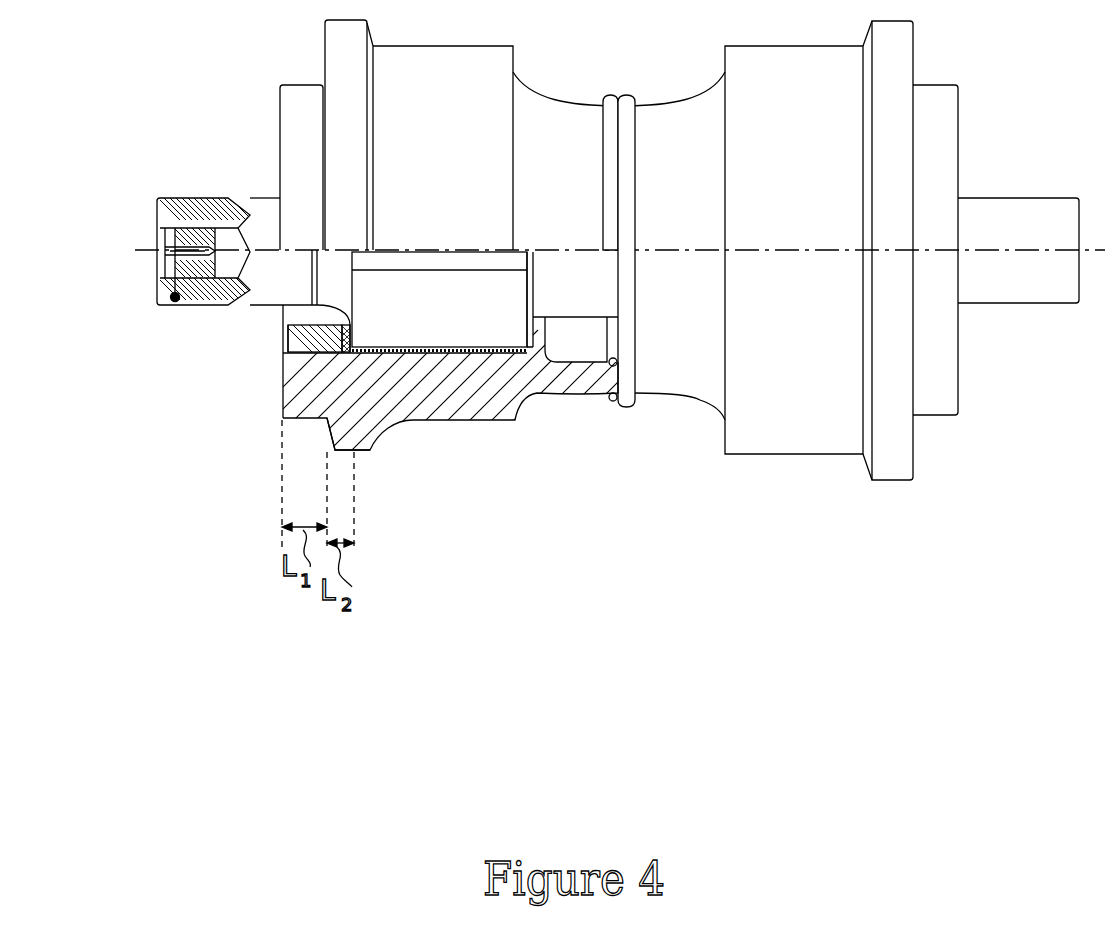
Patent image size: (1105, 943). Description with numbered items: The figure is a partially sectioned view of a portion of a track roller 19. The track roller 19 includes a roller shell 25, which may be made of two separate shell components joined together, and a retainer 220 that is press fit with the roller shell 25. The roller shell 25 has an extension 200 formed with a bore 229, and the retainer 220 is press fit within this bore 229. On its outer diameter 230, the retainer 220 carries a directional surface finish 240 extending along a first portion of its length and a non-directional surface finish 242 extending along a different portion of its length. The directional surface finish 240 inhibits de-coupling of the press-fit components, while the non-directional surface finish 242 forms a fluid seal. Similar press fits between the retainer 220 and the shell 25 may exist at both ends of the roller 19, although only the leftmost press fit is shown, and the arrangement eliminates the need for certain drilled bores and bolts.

The track roller 19 is at (634, 449).
The roller shell 25 is at (742, 67).
The retainer 220 is at (157, 297).
The bore 229 is at (310, 337).
The extension 200 is at (288, 340).
The outer diameter 230 is at (363, 348).
The directional surface finish 240 is at (295, 364).
The non-directional surface finish 242 is at (332, 361).